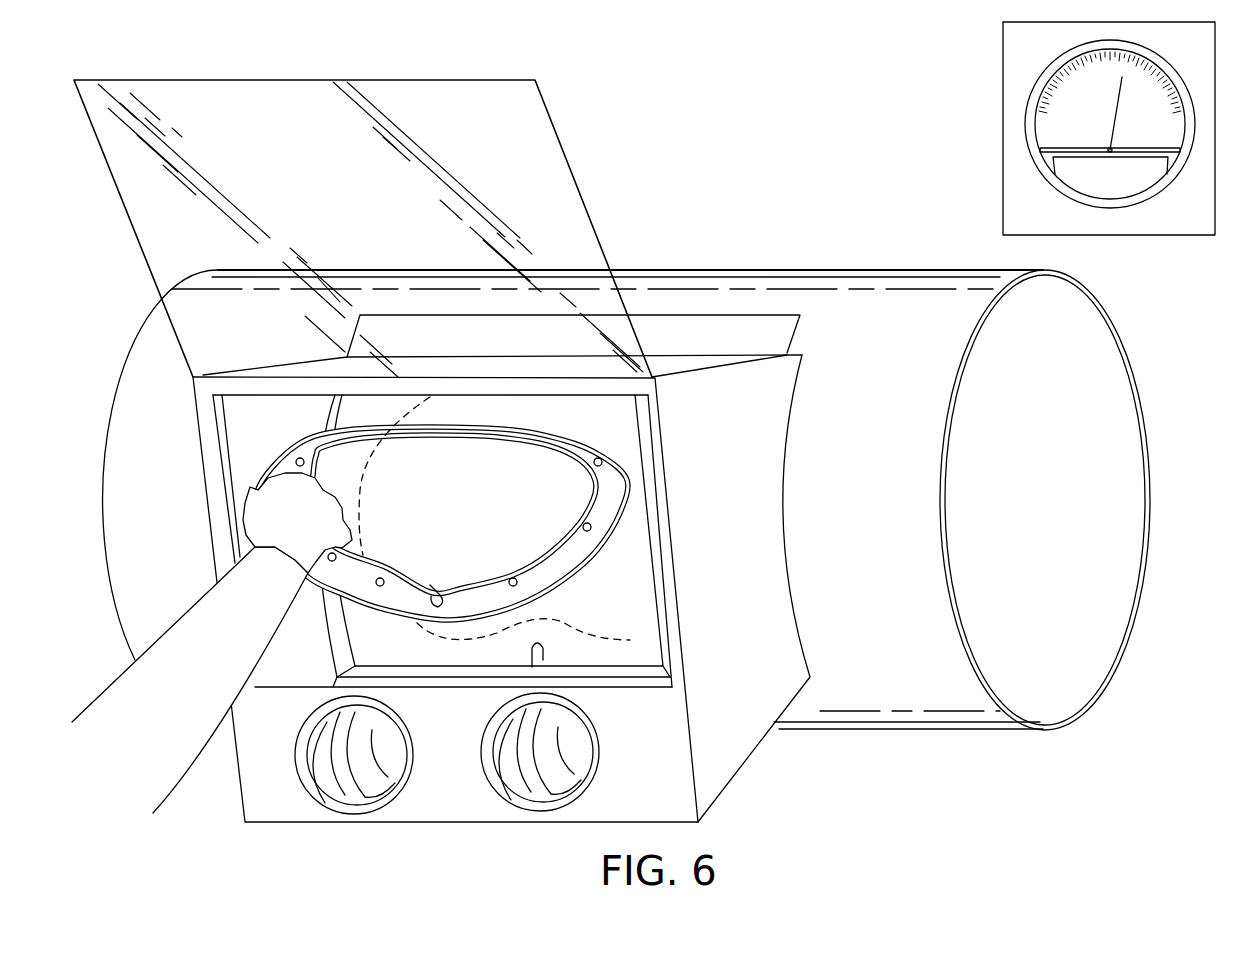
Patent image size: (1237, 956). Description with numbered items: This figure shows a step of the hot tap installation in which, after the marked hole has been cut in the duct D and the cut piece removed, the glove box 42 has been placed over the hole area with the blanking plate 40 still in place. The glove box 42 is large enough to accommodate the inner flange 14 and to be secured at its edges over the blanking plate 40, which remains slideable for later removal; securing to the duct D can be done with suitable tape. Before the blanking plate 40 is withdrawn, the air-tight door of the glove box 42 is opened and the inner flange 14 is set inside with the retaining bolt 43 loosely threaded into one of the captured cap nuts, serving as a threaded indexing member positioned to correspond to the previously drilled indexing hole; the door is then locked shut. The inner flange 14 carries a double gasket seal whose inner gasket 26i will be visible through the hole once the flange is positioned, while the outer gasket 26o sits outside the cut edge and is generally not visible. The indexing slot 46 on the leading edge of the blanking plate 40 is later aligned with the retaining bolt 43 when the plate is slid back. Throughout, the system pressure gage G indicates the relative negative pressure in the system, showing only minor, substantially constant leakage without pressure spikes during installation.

The inner flange 14 is at (280, 470).
The blanking plate 40 is at (497, 462).
The inner gasket 26i is at (597, 487).
The outer gasket 26o is at (628, 505).
The indexing slot 46 is at (545, 657).
The glove box 42 is at (280, 802).
The retaining bolt 43 is at (432, 607).
The duct D is at (893, 723).
The system pressure gage G is at (1109, 128).